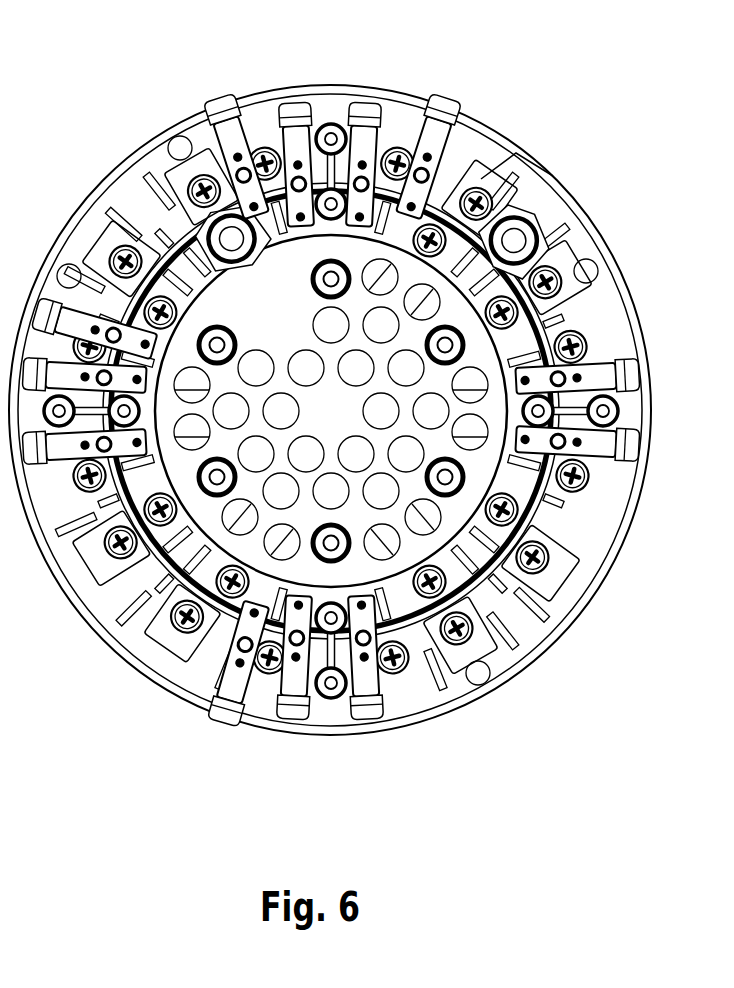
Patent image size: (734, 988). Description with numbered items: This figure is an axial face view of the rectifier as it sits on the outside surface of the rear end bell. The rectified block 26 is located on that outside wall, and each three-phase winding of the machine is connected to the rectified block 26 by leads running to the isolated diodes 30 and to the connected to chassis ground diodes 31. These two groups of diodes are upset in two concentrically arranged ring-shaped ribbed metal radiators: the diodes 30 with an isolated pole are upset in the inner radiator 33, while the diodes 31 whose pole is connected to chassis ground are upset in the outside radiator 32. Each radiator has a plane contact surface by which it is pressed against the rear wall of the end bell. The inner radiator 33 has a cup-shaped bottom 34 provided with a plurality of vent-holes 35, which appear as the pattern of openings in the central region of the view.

The rectified block 26 is at (243, 92).
The isolated diodes 30 is at (458, 121).
The connected to chassis ground diodes 31 is at (479, 121).
The outside radiator 32 is at (595, 185).
The inner radiator 33 is at (622, 242).
The cup-shaped bottom 34 is at (461, 401).
The vent-holes 35 is at (448, 409).